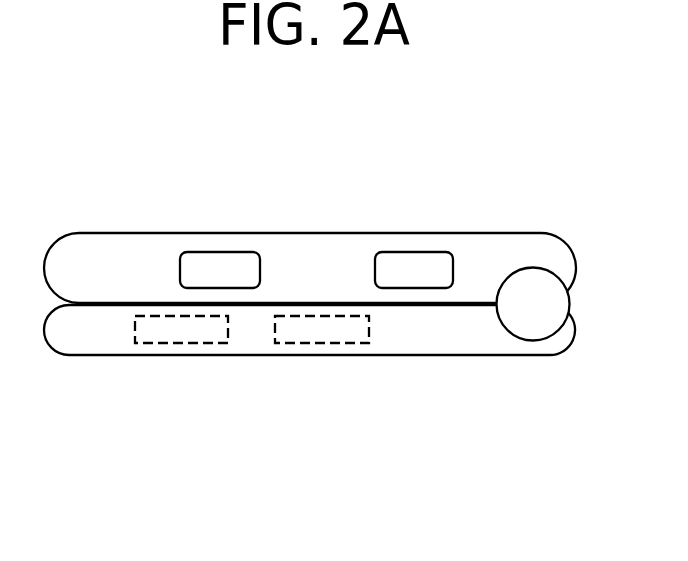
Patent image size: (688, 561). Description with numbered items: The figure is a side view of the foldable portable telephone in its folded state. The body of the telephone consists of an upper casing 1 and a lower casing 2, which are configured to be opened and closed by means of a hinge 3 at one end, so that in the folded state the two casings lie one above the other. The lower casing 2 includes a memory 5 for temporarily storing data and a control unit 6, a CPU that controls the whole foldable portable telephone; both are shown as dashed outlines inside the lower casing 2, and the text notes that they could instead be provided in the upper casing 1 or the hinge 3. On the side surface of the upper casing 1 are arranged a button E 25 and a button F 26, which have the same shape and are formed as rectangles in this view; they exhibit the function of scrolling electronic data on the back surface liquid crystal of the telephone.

The upper casing 1 is at (527, 232).
The lower casing 2 is at (462, 354).
The hinge 3 is at (571, 297).
The memory 5 is at (185, 343).
The control unit 6 is at (325, 343).
The button E 25 is at (235, 252).
The button F 26 is at (423, 252).